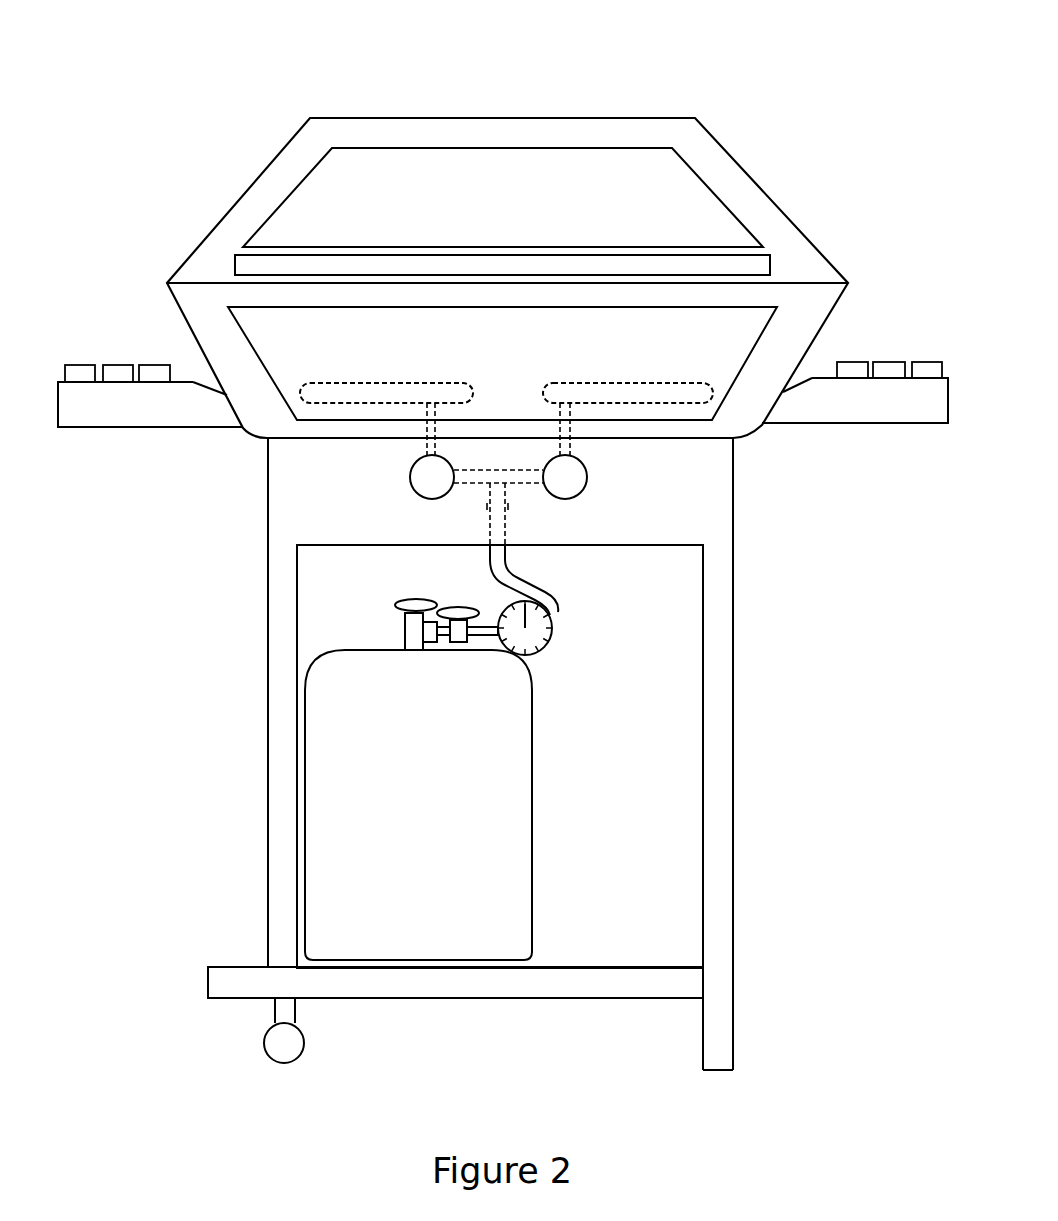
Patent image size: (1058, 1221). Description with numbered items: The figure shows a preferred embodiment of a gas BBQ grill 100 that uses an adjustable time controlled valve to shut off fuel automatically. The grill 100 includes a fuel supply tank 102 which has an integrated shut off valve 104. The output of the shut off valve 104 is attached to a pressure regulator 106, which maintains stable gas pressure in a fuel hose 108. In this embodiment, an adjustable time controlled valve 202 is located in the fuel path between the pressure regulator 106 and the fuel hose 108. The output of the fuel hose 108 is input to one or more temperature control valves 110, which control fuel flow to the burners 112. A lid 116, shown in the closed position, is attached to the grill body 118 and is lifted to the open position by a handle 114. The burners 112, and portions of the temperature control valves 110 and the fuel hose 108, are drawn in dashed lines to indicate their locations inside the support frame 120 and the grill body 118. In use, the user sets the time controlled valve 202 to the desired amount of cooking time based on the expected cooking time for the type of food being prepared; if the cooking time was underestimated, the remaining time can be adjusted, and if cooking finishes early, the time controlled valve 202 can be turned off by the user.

The gas BBQ grill 100 is at (676, 74).
The fuel supply tank 102 is at (372, 847).
The shut off valve 104 is at (400, 607).
The pressure regulator 106 is at (457, 612).
The fuel hose 108 is at (558, 612).
The temperature control valves 110 is at (578, 468).
The burners 112 is at (555, 395).
The handle 114 is at (495, 263).
The lid 116 is at (243, 220).
The grill body 118 is at (215, 351).
The support frame 120 is at (275, 625).
The time controlled valve 202 is at (540, 650).